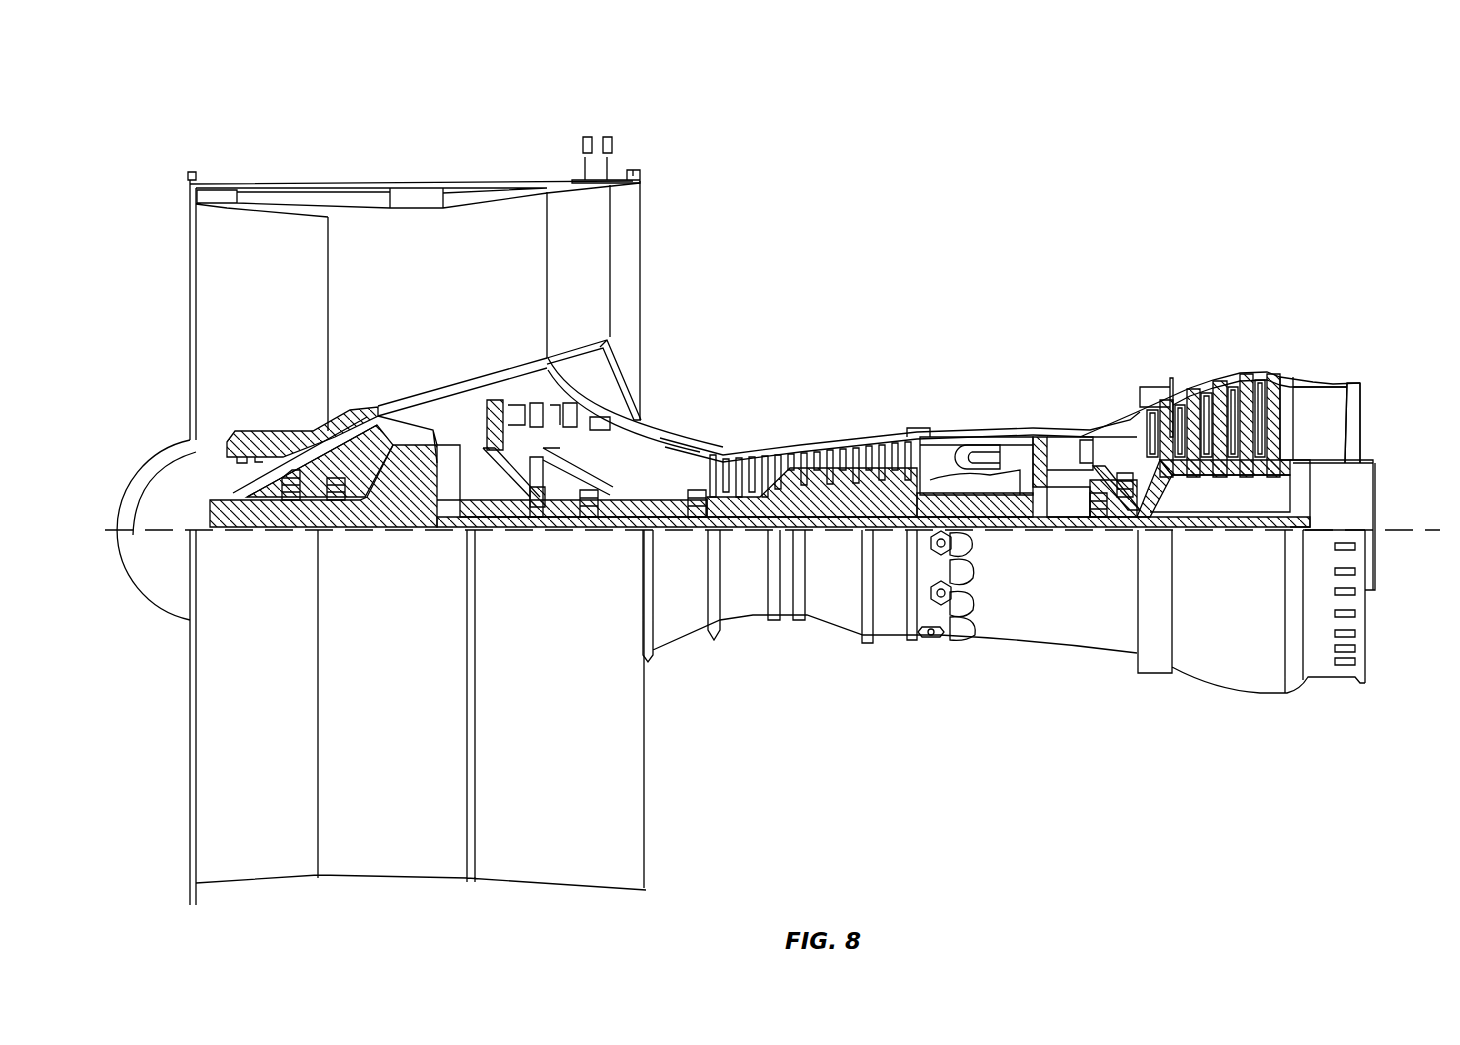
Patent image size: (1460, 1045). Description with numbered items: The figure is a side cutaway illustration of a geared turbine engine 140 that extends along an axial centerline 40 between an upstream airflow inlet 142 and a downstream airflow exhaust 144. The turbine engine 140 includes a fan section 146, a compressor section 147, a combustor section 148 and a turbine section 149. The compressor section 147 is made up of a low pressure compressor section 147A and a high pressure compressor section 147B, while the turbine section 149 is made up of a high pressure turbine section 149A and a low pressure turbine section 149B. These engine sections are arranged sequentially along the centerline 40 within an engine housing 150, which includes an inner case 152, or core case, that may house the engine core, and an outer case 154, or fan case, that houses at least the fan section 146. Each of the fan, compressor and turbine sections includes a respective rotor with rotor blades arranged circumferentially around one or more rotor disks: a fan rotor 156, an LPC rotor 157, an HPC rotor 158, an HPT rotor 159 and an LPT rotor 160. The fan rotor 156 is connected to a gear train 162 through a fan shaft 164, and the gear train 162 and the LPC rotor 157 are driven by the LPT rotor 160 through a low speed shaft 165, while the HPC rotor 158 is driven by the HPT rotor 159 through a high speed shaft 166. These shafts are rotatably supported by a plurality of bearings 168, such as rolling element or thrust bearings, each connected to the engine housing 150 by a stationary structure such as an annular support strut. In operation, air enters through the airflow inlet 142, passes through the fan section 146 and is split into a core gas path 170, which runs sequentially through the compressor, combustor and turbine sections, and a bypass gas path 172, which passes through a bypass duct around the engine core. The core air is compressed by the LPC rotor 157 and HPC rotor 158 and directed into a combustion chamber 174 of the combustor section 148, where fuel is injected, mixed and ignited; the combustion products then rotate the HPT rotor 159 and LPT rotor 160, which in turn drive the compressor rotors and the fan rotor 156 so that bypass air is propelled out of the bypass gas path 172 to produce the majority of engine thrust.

The geared turbine engine 140 is at (155, 152).
The airflow inlet 142 is at (190, 262).
The airflow exhaust 144 is at (1362, 413).
The fan section 146 is at (380, 160).
The compressor section 147 is at (460, 90).
The low pressure compressor (LPC) section 147A is at (645, 140).
The high pressure compressor (HPC) section 147B is at (673, 353).
The combustor section 148 is at (1025, 353).
The turbine section 149 is at (1032, 278).
The high pressure turbine (HPT) section 149A is at (1117, 353).
The low pressure turbine (LPT) section 149B is at (1318, 353).
The engine housing 150 is at (675, 665).
The inner case 152 is at (890, 636).
The outer case 154 is at (583, 890).
The fan rotor 156 is at (215, 445).
The LPC rotor 157 is at (535, 495).
The HPC rotor 158 is at (838, 488).
The HPT rotor 159 is at (1058, 510).
The LPT rotor 160 is at (1222, 466).
The gear train 162 is at (418, 530).
The fan shaft 164 is at (265, 540).
The low speed shaft 165 is at (1232, 532).
The high speed shaft 166 is at (985, 523).
The bearings 168 is at (305, 530).
The core gas path 170 is at (672, 446).
The bypass gas path 172 is at (428, 289).
The combustion chamber 174 is at (977, 456).
The centerline 40 is at (1428, 546).